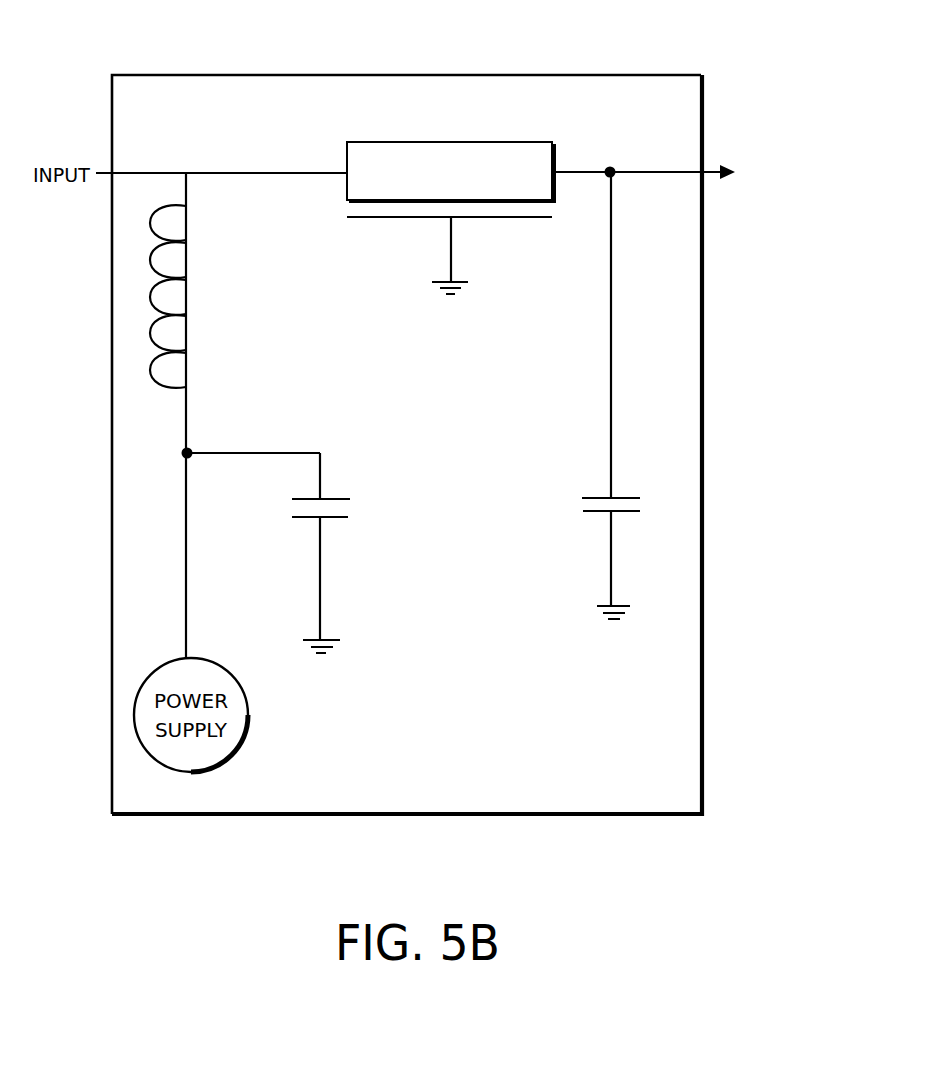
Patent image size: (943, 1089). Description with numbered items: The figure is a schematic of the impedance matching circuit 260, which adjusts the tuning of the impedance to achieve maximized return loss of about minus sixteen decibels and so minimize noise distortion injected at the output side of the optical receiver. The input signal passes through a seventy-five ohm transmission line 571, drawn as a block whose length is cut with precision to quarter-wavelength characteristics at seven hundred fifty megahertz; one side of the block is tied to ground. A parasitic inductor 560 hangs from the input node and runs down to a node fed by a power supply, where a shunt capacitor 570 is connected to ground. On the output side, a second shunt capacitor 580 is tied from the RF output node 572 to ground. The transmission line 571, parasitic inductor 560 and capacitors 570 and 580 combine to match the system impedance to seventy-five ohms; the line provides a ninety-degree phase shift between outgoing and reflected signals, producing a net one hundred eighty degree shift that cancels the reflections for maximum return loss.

The impedance matching circuit 260 is at (436, 74).
The parasitic inductor 560 is at (188, 316).
The capacitor 570 is at (340, 498).
The 75 Ω transmission line 571 is at (347, 190).
The RF output node 572 is at (643, 171).
The capacitor 580 is at (632, 498).